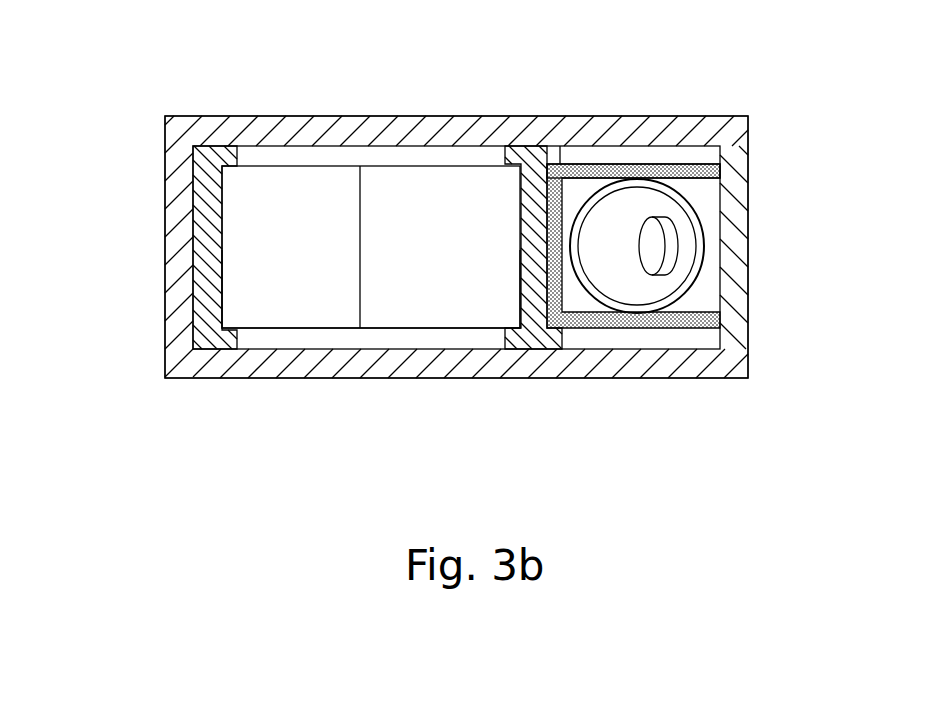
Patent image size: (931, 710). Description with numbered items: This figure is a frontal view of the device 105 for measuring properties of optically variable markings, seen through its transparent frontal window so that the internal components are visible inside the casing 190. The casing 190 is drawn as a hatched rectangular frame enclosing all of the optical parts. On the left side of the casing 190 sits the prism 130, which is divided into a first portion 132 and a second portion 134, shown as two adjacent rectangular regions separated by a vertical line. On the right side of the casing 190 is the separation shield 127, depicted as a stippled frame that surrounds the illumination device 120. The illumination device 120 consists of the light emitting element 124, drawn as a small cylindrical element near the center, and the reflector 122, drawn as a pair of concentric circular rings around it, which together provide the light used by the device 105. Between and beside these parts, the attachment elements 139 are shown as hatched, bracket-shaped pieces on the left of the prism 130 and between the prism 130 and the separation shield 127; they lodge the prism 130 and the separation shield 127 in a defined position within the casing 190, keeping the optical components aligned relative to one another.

The device 105 is at (145, 277).
The casing 190 is at (222, 135).
The attachment elements 139 is at (205, 203).
The prism 130 is at (402, 183).
The first portion of the prism 132 is at (245, 318).
The second portion of the prism 134 is at (495, 313).
The illumination device 120 is at (608, 322).
The separation shield 127 is at (622, 168).
The reflector 122 is at (640, 293).
The light emitting element 124 is at (657, 245).